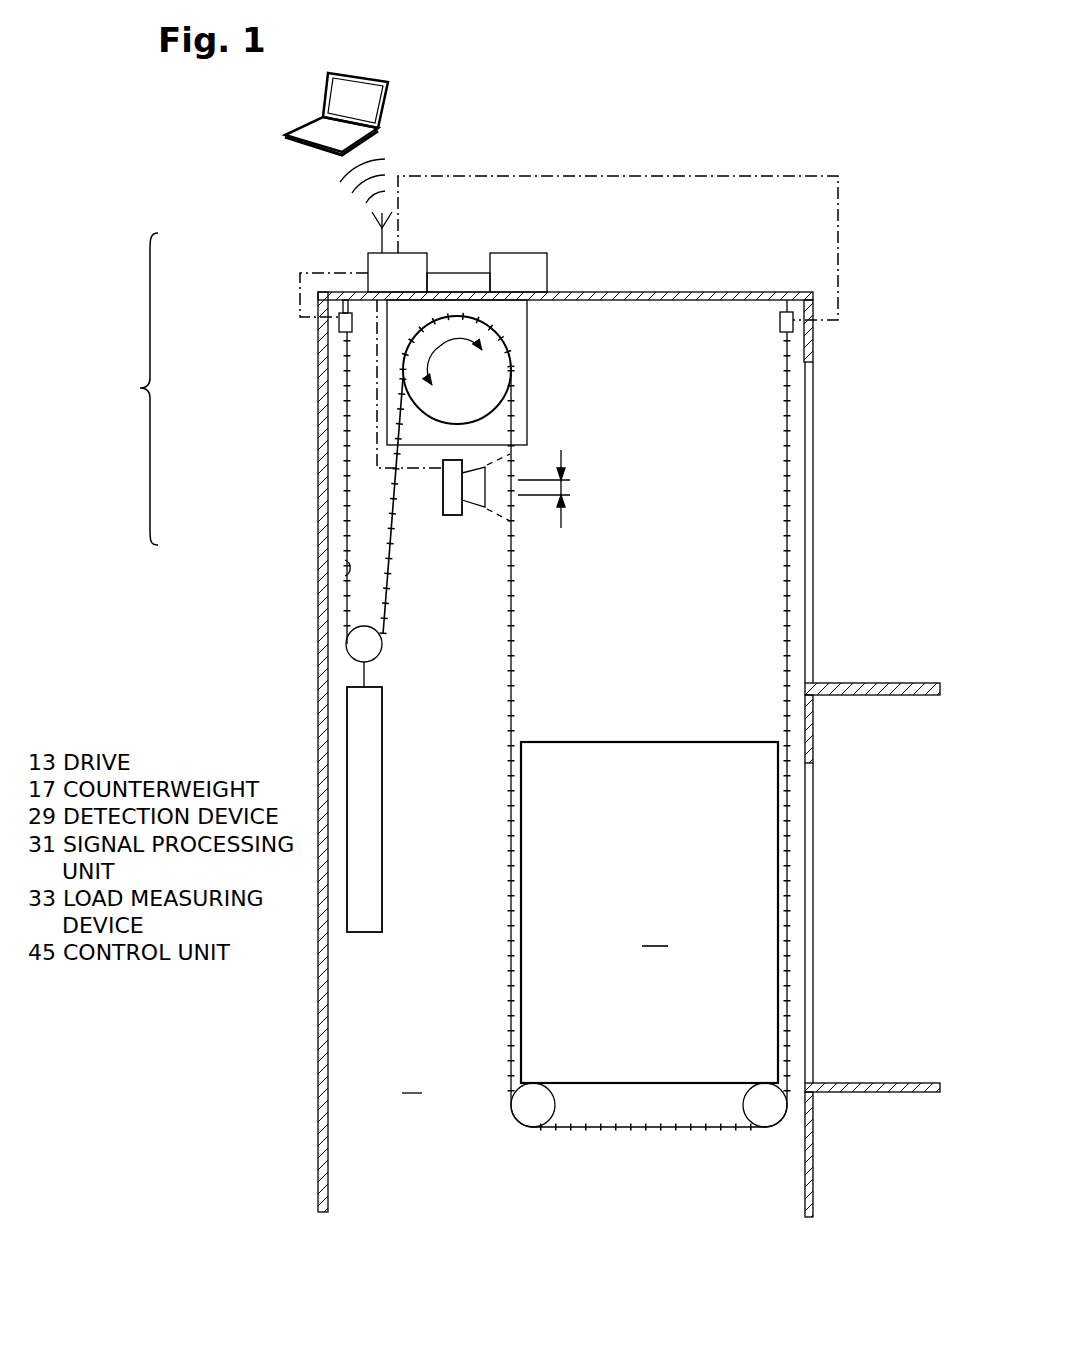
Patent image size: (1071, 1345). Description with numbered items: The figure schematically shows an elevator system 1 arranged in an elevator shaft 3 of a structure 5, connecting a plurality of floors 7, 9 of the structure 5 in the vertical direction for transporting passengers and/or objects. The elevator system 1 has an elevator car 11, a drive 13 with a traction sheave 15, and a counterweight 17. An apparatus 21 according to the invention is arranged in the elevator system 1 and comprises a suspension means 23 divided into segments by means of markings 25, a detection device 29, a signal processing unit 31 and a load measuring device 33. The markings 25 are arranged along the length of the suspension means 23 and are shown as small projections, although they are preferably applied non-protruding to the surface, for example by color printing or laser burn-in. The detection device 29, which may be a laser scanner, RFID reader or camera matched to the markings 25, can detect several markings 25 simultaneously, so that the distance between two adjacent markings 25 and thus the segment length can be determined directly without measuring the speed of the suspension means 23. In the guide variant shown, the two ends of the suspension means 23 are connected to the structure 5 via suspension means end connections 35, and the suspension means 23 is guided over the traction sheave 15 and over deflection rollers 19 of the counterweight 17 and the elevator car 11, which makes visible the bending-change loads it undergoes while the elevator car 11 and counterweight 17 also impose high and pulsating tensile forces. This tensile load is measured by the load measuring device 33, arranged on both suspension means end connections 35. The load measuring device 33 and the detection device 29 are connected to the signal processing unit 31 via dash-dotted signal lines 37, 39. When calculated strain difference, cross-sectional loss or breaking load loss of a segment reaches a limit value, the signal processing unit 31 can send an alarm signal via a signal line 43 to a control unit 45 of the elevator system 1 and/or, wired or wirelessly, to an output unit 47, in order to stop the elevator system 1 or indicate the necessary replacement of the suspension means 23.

The elevator system 1 is at (890, 273).
The elevator shaft 3 is at (412, 1077).
The structure 5 is at (320, 703).
The floor 7 is at (862, 671).
The floor 9 is at (862, 1071).
The elevator car 11 is at (649, 912).
The drive 13 is at (518, 325).
The traction sheave 15 is at (500, 370).
The counterweight 17 is at (373, 748).
The deflection rollers 19 is at (372, 643).
The apparatus 21 is at (130, 389).
The suspension means 23 is at (335, 522).
The markings 25 is at (325, 561).
The detection device 29 is at (450, 487).
The signal processing unit 31 is at (385, 262).
The load measuring device 33 is at (341, 325).
The suspension means end connections 35 is at (345, 305).
The signal line 37 is at (371, 407).
The signal line 39 is at (634, 170).
The signal line 43 is at (456, 270).
The control unit 45 is at (524, 270).
The output unit 47 is at (368, 100).